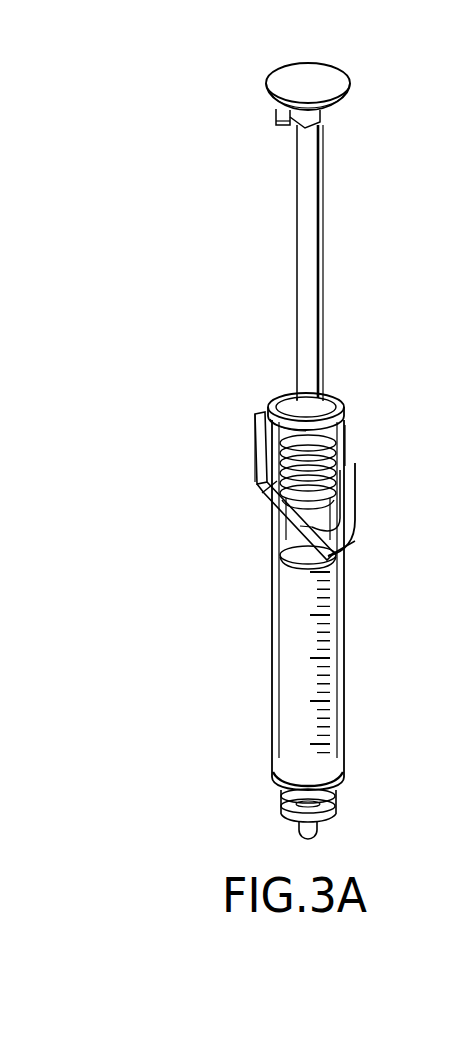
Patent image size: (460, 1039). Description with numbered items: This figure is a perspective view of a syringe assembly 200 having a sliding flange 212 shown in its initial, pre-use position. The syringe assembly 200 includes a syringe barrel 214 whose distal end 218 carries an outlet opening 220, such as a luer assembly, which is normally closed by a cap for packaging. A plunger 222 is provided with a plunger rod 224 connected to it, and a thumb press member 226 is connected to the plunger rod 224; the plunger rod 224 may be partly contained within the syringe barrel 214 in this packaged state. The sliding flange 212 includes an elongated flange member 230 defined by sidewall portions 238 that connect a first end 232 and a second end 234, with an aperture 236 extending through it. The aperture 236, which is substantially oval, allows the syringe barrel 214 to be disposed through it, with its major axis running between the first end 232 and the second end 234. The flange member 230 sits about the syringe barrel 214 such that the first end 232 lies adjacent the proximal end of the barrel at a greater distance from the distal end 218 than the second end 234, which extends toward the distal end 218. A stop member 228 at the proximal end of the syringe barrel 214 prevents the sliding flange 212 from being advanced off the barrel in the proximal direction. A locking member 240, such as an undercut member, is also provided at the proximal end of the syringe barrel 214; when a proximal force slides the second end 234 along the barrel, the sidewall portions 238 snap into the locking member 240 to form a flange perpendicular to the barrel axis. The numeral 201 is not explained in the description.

The syringe assembly 200 is at (195, 140).
The flange opening 201 is at (340, 415).
The sliding flange 212 is at (217, 450).
The syringe barrel 214 is at (280, 611).
The distal end 218 is at (278, 765).
The outlet opening 220 is at (298, 832).
The plunger 222 is at (330, 470).
The plunger rod 224 is at (310, 233).
The thumb press member 226 is at (292, 82).
The stop member 228 is at (275, 405).
The flange member 230 is at (345, 540).
The first end 232 is at (262, 418).
The second end 234 is at (343, 555).
The aperture 236 is at (338, 522).
The sidewall portions 238 is at (267, 486).
The locking member 240 is at (325, 447).